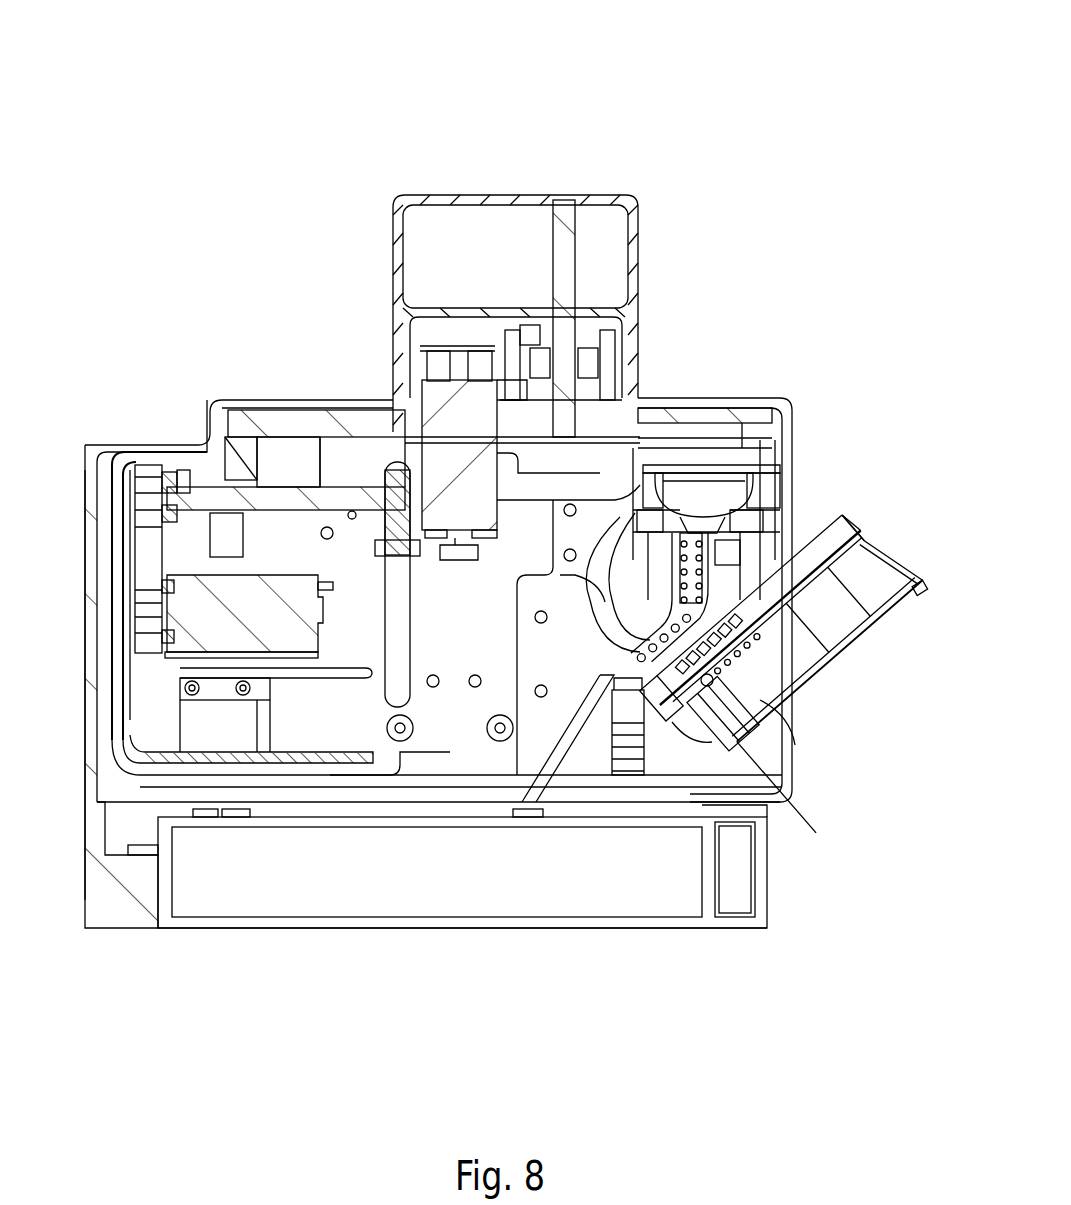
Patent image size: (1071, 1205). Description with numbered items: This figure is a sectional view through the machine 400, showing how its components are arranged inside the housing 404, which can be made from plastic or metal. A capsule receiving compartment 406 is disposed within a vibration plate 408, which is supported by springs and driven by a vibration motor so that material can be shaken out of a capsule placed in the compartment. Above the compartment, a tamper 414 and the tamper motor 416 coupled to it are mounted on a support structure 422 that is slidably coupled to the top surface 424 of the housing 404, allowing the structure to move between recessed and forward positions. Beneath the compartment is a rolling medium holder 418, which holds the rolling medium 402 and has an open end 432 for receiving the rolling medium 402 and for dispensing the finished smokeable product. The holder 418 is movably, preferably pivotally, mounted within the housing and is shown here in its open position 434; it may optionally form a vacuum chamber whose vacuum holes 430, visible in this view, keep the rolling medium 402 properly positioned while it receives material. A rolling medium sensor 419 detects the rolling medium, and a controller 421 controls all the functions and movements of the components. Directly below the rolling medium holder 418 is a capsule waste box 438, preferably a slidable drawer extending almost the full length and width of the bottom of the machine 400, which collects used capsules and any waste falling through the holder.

The machine 400 is at (677, 60).
The rolling medium 402 is at (837, 527).
The housing 404 is at (93, 652).
The capsule receiving compartment 406 is at (702, 476).
The vibration plate 408 is at (752, 485).
The tamper 414 is at (568, 248).
The tamper motor 416 is at (436, 410).
The rolling medium holder 418 is at (848, 637).
The rolling medium sensor 419 is at (816, 833).
The controller 421 is at (180, 663).
The support structure 422 is at (396, 222).
The top surface 424 is at (260, 400).
The vacuum holes 430 is at (790, 697).
The open end 432 is at (871, 522).
The open position 434 is at (921, 616).
The capsule waste box 438 is at (679, 905).